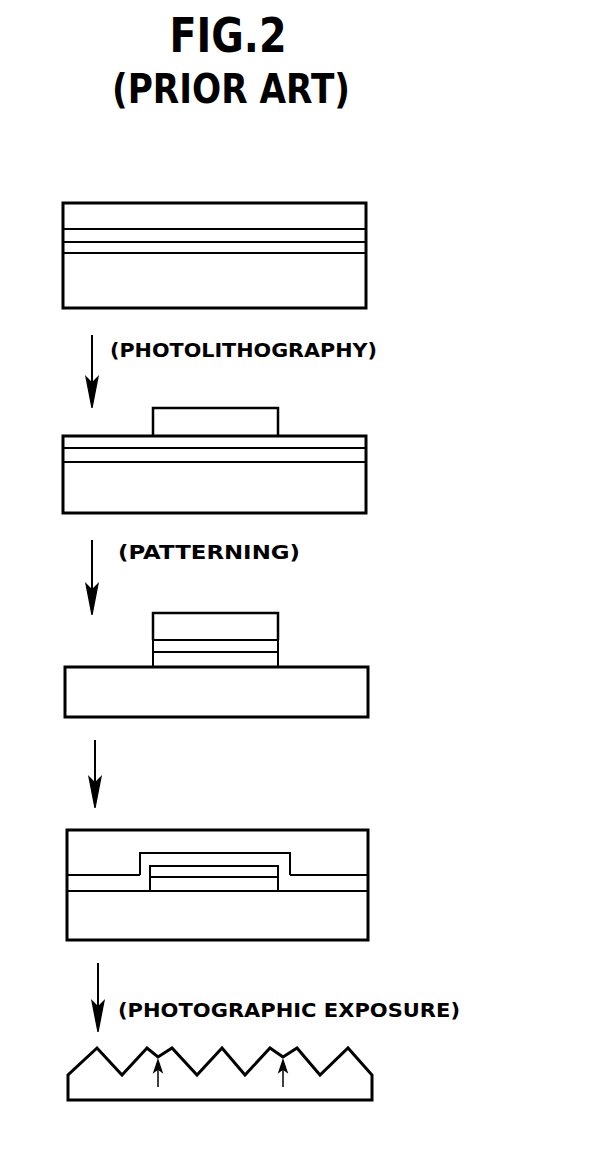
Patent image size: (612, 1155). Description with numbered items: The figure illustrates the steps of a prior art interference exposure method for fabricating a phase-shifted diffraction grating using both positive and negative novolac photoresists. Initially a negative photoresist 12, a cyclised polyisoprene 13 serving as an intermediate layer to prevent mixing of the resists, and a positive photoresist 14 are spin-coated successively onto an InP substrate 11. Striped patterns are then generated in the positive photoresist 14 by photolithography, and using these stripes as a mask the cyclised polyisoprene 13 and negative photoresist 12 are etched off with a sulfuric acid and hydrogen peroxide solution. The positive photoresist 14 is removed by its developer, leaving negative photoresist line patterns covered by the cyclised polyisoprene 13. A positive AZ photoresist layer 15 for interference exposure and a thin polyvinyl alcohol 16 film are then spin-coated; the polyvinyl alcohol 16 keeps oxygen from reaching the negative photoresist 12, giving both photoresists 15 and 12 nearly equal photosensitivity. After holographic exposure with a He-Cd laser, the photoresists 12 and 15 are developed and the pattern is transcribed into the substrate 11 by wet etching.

The InP substrate 11 is at (355, 277).
The negative photoresist 12 is at (355, 249).
The cyclised polyisoprene 13 is at (355, 236).
The positive photoresist 14 is at (355, 215).
The positive AZ photoresist layer 15 is at (356, 882).
The polyvinyl alcohol 16 is at (356, 850).